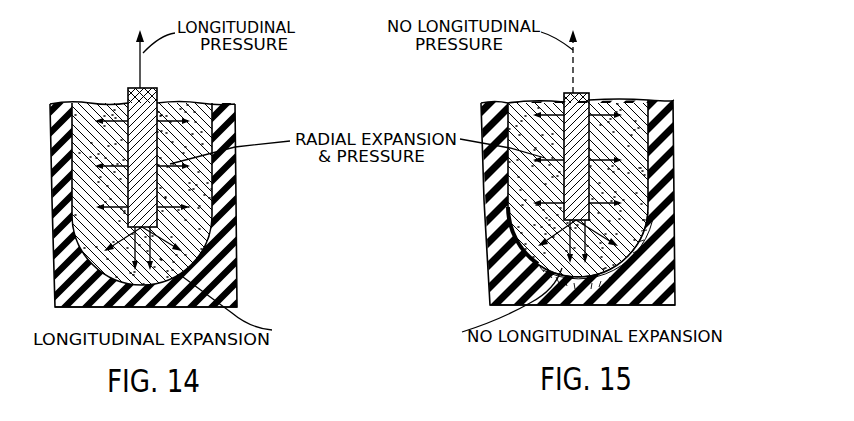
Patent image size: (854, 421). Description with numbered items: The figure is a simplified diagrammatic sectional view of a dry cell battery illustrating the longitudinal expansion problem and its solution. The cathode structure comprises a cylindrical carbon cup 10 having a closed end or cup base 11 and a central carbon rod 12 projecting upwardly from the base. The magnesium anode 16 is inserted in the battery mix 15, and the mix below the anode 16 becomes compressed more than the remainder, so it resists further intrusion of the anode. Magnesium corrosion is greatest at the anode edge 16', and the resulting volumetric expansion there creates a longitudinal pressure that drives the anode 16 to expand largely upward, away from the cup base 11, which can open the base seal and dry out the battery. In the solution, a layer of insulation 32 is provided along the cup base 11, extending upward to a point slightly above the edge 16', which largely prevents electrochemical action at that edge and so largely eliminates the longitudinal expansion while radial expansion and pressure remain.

In FIG. 14, the carbon cup 10 is at (236, 178).
In FIG. 15, the carbon cup 10 is at (673, 195).
In FIG. 14, the cup base 11 is at (130, 300).
In FIG. 15, the cup base 11 is at (523, 297).
In FIG. 14, the carbon rod 12 is at (52, 172).
In FIG. 15, the carbon rod 12 is at (484, 200).
In FIG. 14, the battery mix 15 is at (86, 106).
In FIG. 15, the battery mix 15 is at (517, 104).
In FIG. 14, the anode 16 is at (162, 140).
In FIG. 15, the anode 16 is at (577, 140).
In FIG. 14, the anode edge 16' is at (130, 250).
In FIG. 15, the anode edge 16' is at (587, 244).
In FIG. 15, the layer of insulation 32 is at (648, 238).